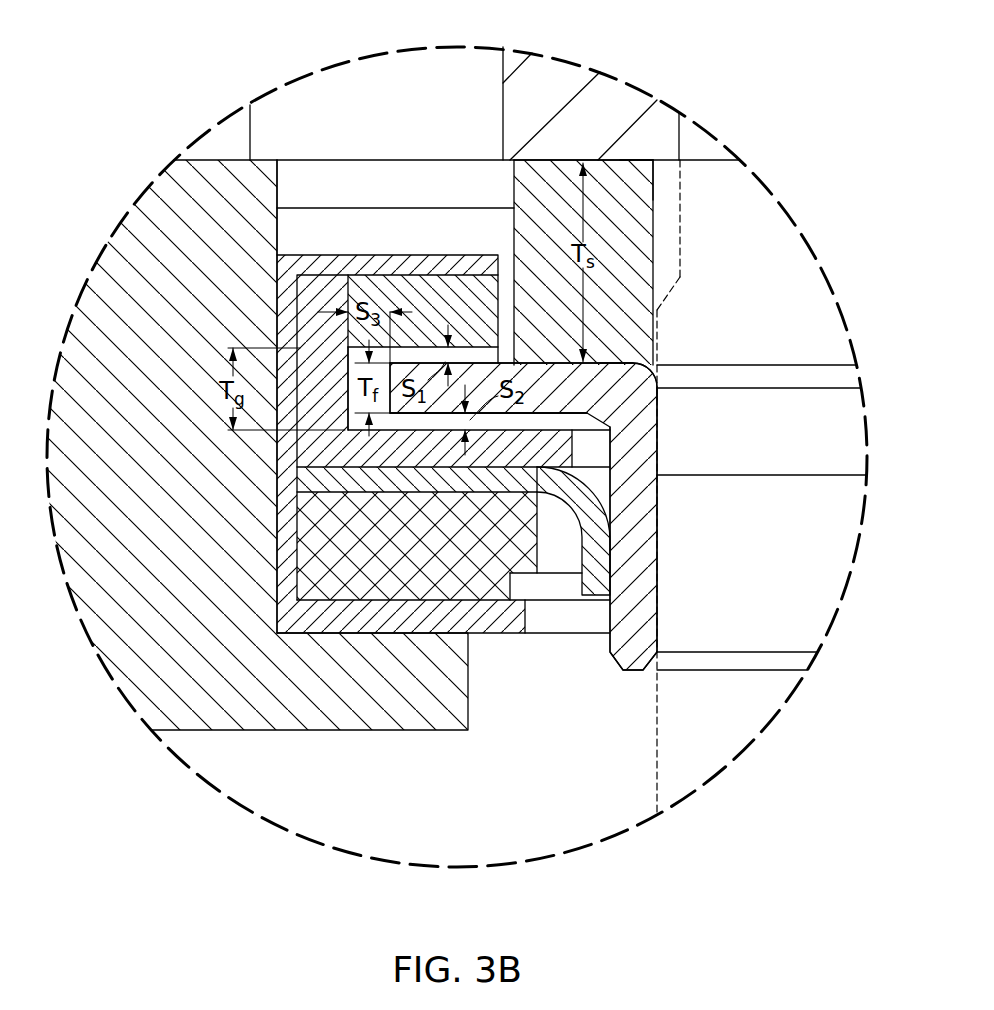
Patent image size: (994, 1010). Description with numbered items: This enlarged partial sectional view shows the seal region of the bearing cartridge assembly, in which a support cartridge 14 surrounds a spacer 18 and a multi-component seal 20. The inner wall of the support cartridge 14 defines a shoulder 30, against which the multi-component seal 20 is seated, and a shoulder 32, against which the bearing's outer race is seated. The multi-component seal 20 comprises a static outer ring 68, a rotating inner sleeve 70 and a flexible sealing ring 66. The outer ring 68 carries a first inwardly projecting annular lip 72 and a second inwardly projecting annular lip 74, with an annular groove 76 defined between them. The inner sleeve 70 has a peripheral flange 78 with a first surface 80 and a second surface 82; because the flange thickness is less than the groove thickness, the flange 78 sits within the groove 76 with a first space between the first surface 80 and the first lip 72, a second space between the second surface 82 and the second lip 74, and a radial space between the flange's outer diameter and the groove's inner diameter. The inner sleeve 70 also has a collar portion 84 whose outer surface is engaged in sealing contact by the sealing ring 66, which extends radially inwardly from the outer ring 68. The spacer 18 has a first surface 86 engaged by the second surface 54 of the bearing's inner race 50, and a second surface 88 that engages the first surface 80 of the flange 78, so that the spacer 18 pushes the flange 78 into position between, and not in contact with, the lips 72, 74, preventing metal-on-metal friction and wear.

The support cartridge 14 is at (96, 286).
The spacer 18 is at (626, 267).
The multi-component seal 20 is at (327, 248).
The shoulder 30 is at (390, 632).
The shoulder 32 is at (205, 160).
The inner race 50 is at (566, 70).
The second surface 54 is at (636, 163).
The sealing ring 66 is at (607, 506).
The outer ring 68 is at (286, 528).
The inner sleeve 70 is at (656, 390).
The first inwardly projecting annular lip 72 is at (463, 280).
The second inwardly projecting annular lip 74 is at (517, 457).
The annular groove 76 is at (358, 413).
The peripheral flange 78 is at (490, 365).
The first surface 80 is at (416, 360).
The second surface 82 is at (448, 416).
The collar portion 84 is at (647, 563).
The first surface 86 is at (603, 160).
The second surface 88 is at (568, 366).